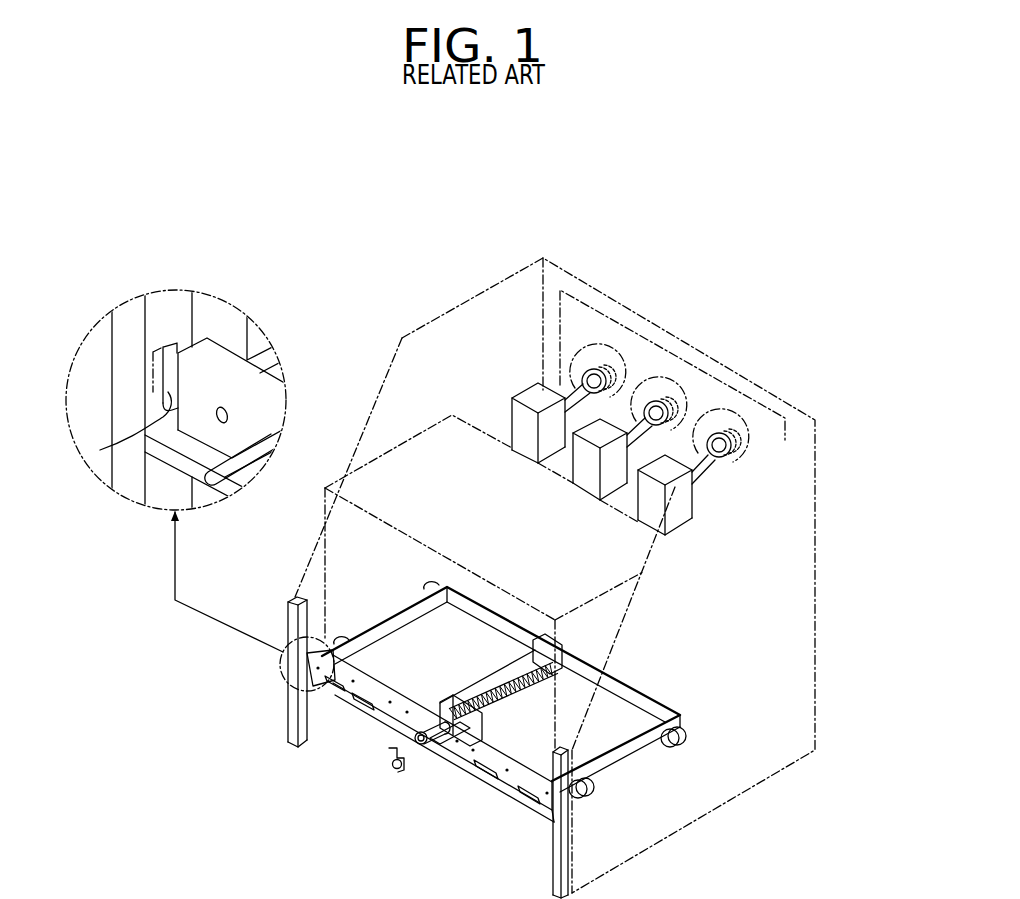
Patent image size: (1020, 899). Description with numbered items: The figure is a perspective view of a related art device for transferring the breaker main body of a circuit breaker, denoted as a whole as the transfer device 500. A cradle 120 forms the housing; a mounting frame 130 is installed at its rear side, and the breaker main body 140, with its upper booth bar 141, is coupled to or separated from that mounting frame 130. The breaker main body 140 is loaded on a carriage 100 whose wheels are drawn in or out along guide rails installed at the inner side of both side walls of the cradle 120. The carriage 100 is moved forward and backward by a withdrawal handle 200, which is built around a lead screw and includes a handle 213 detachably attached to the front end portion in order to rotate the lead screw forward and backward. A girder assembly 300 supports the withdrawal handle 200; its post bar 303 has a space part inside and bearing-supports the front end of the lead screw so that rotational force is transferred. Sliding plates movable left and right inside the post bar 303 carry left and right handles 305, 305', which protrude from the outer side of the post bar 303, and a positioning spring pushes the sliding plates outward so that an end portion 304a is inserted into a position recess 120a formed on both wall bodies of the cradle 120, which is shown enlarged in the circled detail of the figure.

The carriage 100 is at (385, 615).
The cradle 120 is at (806, 598).
The position recess 120a is at (100, 450).
The mounting frame 130 is at (668, 360).
The breaker main body 140 is at (408, 452).
The upper booth bar 141 is at (565, 383).
The withdrawal handle 200 is at (390, 766).
The handle 213 is at (390, 756).
The girder assembly 300 is at (542, 822).
The post bar 303 is at (207, 380).
The end portion 304a is at (178, 343).
The left handle 305 is at (276, 675).
The right handle 305' is at (509, 822).
The transfer device 500 is at (435, 767).